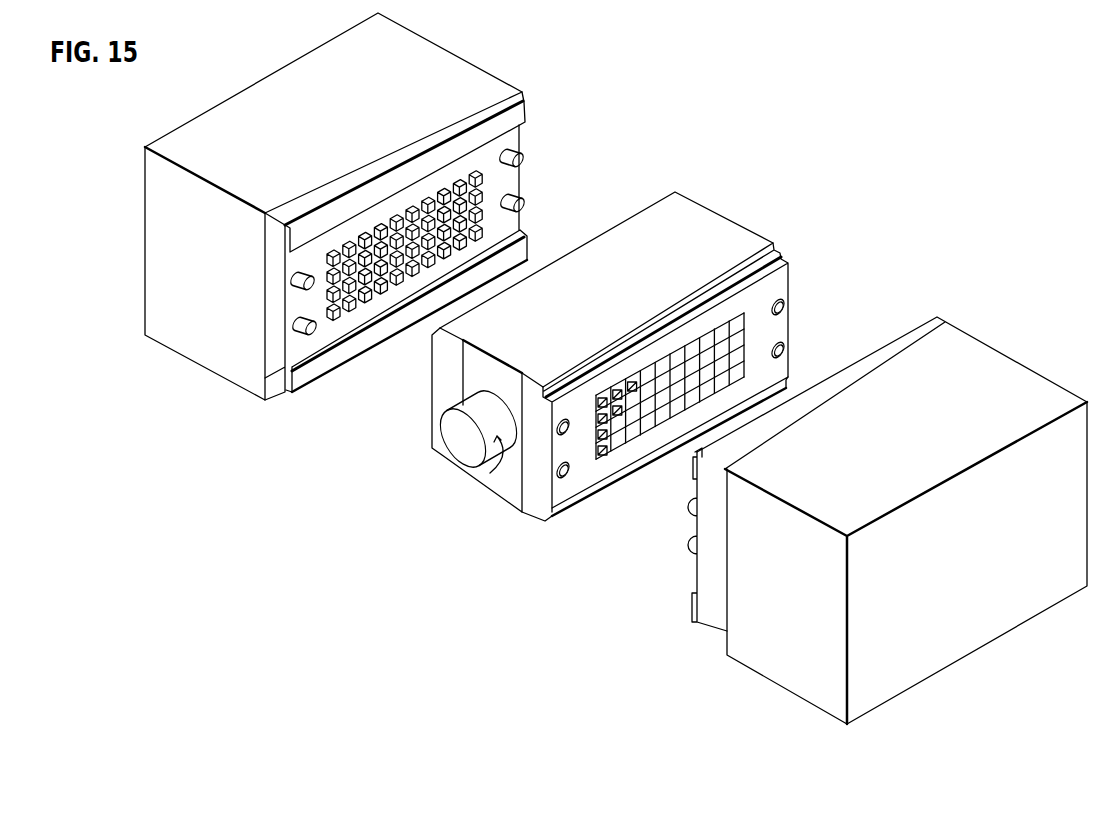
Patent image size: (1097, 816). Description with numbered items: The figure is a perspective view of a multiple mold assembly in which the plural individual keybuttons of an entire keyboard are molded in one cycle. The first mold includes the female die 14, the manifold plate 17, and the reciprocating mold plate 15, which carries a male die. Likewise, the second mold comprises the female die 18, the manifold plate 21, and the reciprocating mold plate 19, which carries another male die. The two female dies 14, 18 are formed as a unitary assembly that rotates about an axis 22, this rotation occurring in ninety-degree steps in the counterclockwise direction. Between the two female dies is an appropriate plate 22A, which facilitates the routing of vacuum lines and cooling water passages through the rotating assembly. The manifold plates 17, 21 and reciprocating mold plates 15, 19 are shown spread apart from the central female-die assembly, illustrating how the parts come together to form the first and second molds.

The cover housing 21 is at (463, 74).
The connector panel with contact pins 19 is at (500, 142).
The module housing 22A is at (717, 233).
The front plate 14 is at (445, 378).
The knob 22 is at (458, 444).
The base housing 18 is at (536, 507).
The rear connector plate 15 is at (711, 565).
The rear housing 17 is at (756, 654).